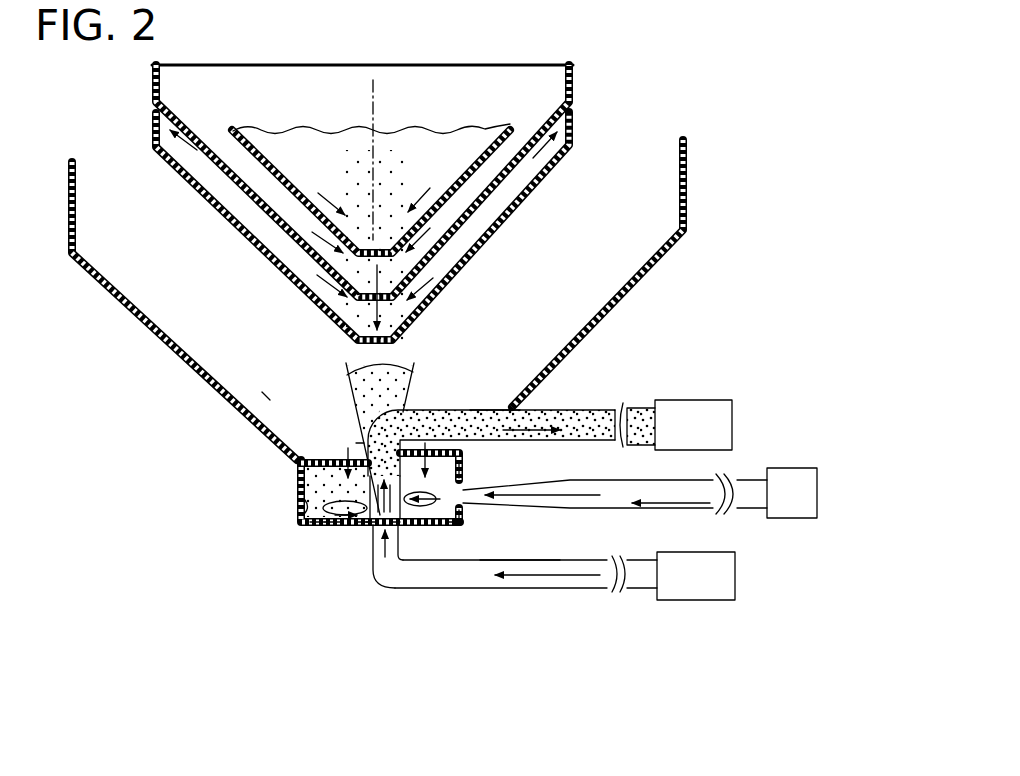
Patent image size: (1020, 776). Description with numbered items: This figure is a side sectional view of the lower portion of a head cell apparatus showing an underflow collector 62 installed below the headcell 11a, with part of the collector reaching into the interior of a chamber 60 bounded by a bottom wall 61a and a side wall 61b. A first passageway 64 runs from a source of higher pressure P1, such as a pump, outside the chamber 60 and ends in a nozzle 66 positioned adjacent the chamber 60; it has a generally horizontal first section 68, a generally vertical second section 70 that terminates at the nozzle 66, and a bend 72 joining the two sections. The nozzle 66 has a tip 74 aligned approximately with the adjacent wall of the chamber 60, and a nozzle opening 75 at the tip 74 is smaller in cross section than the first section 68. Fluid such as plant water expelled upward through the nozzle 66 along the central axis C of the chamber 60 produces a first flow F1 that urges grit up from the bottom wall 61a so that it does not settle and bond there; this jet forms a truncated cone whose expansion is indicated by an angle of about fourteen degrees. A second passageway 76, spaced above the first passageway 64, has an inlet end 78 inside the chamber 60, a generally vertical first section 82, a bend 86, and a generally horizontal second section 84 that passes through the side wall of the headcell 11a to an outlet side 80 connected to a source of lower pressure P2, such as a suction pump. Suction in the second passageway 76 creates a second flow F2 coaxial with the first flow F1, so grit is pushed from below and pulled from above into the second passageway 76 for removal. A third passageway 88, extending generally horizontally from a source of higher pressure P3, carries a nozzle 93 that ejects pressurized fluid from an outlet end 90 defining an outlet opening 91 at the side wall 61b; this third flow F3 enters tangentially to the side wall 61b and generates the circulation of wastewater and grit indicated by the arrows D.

The headcell 11a is at (687, 185).
The chamber 60 is at (299, 480).
The bottom wall 61a is at (317, 525).
The side wall 61b is at (300, 517).
The underflow collector 62 is at (262, 390).
The first passageway 64 is at (517, 588).
The nozzle 66 is at (370, 528).
The first section 68 is at (500, 560).
The second section 70 is at (378, 558).
The bend 72 is at (397, 563).
The tip 74 is at (363, 527).
The nozzle opening 75 is at (397, 524).
The second passageway 76 is at (447, 410).
The inlet end 78 is at (461, 470).
The outlet side 80 is at (605, 407).
The first section 82 is at (358, 443).
The second section 84 is at (490, 410).
The bend 86 is at (346, 386).
The third passageway 88 is at (612, 508).
The outlet end 90 is at (458, 524).
The outlet opening 91 is at (461, 516).
The nozzle 93 is at (553, 494).
The central axis C is at (373, 105).
The arrows D is at (330, 527).
The first flow F1 is at (403, 583).
The second flow F2 is at (535, 410).
The third flow F3 is at (570, 480).
The source of higher pressure P1 is at (696, 576).
The source of lower pressure P2 is at (693, 425).
The source of higher pressure P3 is at (792, 493).